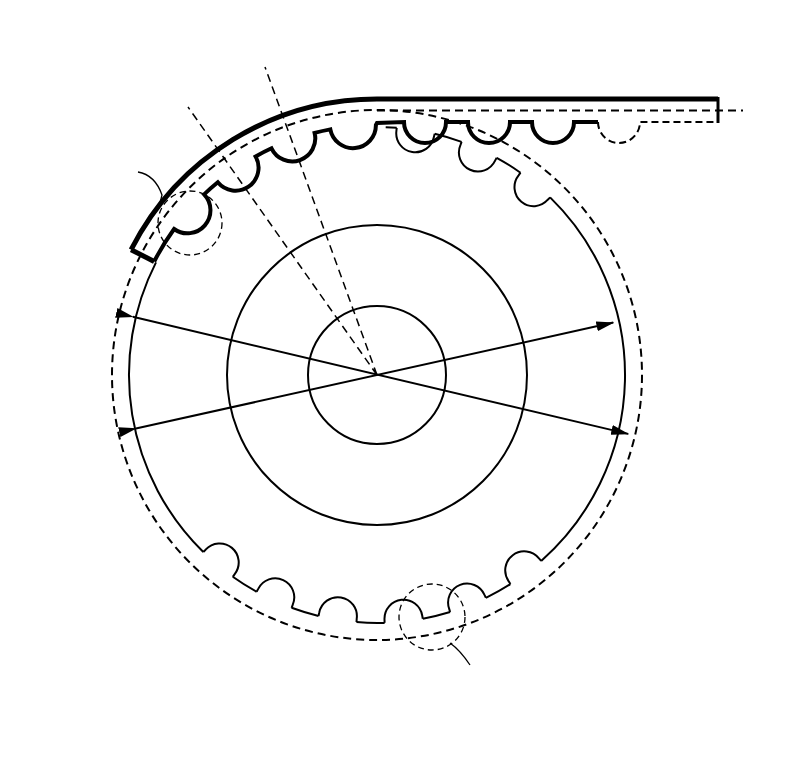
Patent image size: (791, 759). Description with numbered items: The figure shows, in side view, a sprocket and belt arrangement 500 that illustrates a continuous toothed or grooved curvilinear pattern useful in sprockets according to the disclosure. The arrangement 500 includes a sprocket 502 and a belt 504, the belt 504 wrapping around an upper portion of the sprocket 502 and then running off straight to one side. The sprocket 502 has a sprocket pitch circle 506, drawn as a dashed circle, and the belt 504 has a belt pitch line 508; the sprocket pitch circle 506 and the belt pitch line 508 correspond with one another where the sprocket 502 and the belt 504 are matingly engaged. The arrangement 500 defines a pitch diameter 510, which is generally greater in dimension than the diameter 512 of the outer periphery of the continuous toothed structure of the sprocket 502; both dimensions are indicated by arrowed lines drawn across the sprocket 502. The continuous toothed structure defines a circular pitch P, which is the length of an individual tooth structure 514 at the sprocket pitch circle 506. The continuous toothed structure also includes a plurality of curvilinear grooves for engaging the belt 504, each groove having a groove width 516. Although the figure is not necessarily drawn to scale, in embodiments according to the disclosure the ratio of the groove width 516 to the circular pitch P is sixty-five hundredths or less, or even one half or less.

The sprocket and belt arrangement 500 is at (396, 86).
The sprocket 502 is at (361, 405).
The belt 504 is at (424, 155).
The sprocket pitch circle 506 is at (586, 542).
The belt pitch line 508 is at (620, 128).
The pitch diameter 510 is at (162, 323).
The diameter of the outer periphery 512 is at (562, 333).
The individual tooth structure 514 is at (307, 163).
The groove width 516 is at (232, 592).
The circular pitch P is at (262, 130).